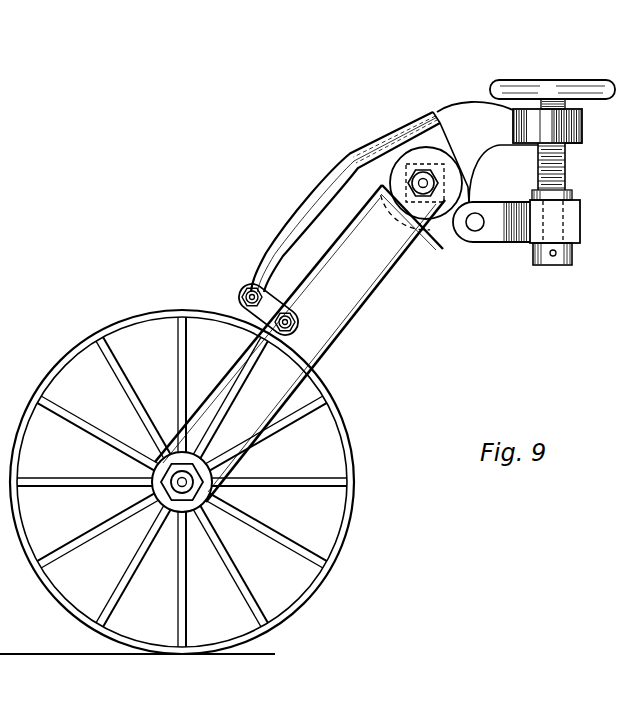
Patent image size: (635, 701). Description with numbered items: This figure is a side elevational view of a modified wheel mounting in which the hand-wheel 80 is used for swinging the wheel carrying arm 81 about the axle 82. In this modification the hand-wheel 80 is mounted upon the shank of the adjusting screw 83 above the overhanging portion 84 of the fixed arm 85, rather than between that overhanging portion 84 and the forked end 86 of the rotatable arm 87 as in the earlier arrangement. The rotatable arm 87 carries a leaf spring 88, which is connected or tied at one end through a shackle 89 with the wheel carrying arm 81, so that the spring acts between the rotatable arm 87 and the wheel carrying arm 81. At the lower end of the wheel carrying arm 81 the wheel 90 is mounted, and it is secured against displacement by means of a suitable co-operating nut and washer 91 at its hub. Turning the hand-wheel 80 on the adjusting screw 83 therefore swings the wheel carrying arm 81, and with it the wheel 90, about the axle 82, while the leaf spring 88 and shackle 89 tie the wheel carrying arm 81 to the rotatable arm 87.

The hand-wheel 80 is at (575, 80).
The wheel carrying arm 81 is at (328, 328).
The axle 82 is at (405, 166).
The adjusting screw 83 is at (567, 163).
The overhanging portion 84 is at (535, 118).
The fixed arm 85 is at (463, 137).
The forked end 86 is at (557, 224).
The rotatable arm 87 is at (444, 238).
The leaf spring 88 is at (266, 221).
The shackle 89 is at (248, 295).
The wheel 90 is at (348, 531).
The nut and washer 91 is at (138, 526).